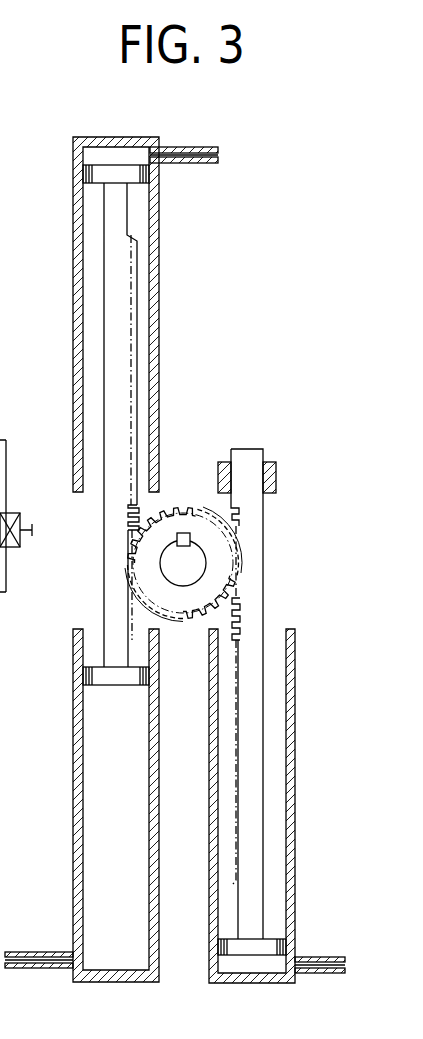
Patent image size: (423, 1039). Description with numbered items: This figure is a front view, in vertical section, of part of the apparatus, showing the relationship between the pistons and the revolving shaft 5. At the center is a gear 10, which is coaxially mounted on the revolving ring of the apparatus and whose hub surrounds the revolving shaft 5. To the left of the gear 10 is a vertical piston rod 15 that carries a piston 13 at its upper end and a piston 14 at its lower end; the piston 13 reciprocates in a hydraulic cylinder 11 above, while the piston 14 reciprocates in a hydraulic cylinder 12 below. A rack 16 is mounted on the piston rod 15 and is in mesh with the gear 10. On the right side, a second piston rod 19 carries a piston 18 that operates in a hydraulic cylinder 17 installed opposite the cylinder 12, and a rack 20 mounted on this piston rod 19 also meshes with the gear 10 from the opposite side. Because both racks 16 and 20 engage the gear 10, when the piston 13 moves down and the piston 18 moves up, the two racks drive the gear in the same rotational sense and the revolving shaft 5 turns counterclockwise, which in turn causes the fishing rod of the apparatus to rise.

The revolving shaft 5 is at (172, 567).
The gear 10 is at (188, 508).
The hydraulic cylinder 11 is at (72, 258).
The hydraulic cylinder 12 is at (73, 845).
The piston 13 is at (107, 172).
The piston 14 is at (98, 678).
The piston rod 15 is at (106, 562).
The rack 16 is at (130, 513).
The hydraulic cylinder 17 is at (296, 853).
The piston 18 is at (272, 944).
The piston rod 19 is at (250, 512).
The rack 20 is at (235, 605).